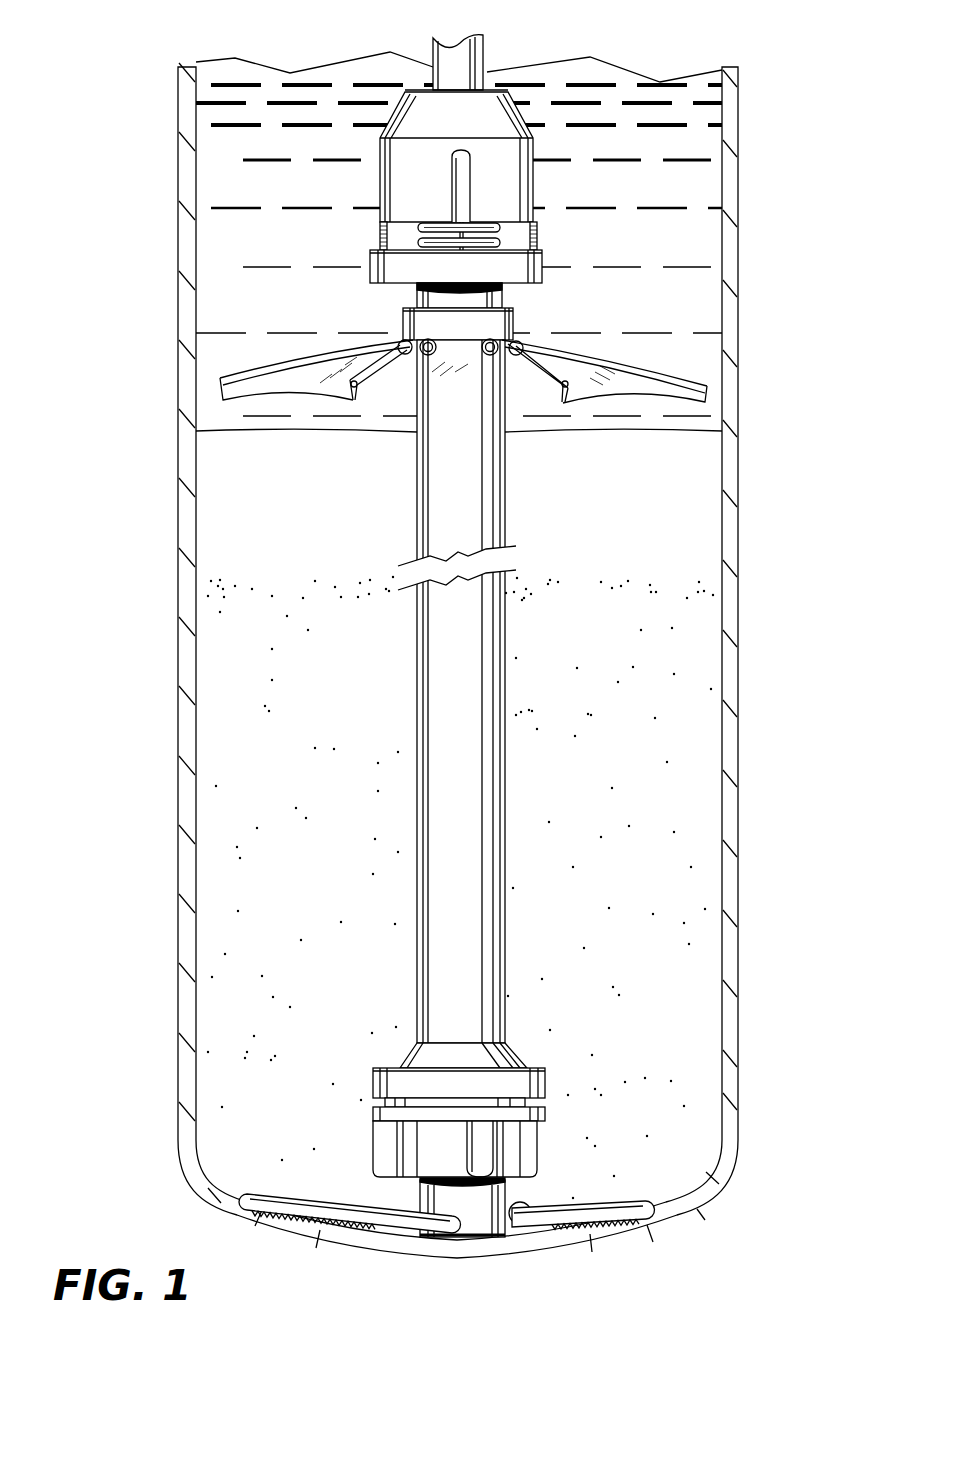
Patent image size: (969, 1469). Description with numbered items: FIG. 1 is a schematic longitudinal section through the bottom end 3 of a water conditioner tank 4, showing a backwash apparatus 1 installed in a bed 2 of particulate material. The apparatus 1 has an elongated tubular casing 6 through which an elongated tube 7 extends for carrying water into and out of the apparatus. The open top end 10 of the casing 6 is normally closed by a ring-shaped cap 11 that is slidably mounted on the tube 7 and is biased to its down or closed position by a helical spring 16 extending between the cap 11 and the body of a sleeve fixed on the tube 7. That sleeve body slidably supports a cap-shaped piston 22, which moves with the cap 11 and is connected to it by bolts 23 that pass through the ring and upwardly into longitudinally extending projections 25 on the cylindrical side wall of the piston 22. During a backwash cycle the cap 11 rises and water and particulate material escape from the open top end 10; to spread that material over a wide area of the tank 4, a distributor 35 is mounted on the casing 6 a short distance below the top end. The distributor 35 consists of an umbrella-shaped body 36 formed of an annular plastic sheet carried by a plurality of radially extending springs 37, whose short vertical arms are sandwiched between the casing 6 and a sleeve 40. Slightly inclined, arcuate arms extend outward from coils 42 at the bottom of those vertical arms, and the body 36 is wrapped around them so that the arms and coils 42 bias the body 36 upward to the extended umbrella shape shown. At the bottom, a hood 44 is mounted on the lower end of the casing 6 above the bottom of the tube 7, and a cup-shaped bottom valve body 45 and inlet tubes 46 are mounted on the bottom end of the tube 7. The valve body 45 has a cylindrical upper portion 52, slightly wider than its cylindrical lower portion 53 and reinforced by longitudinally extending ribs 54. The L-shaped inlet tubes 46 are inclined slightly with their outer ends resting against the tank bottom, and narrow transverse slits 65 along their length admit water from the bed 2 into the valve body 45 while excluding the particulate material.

The backwash apparatus 1 is at (442, 673).
The bed 2 is at (594, 864).
The bottom end 3 is at (738, 930).
The water conditioner tank 4 is at (178, 541).
The tubular casing 6 is at (440, 717).
The tube 7 is at (462, 67).
The open top end 10 is at (440, 296).
The cap 11 is at (538, 266).
The helical spring 16 is at (418, 240).
The piston 22 is at (442, 156).
The bolts 23 is at (381, 232).
The projections 25 is at (456, 178).
The distributor 35 is at (503, 405).
The umbrella-shaped body 36 is at (283, 388).
The springs 37 is at (372, 390).
The sleeve 40 is at (512, 324).
The coils 42 is at (481, 356).
The hood 44 is at (515, 1062).
The bottom valve body 45 is at (448, 1141).
The inlet tubes 46 is at (453, 1210).
The upper portion 52 is at (512, 1152).
The lower portion 53 is at (468, 1214).
The ribs 54 is at (538, 1177).
The slits 65 is at (350, 1230).